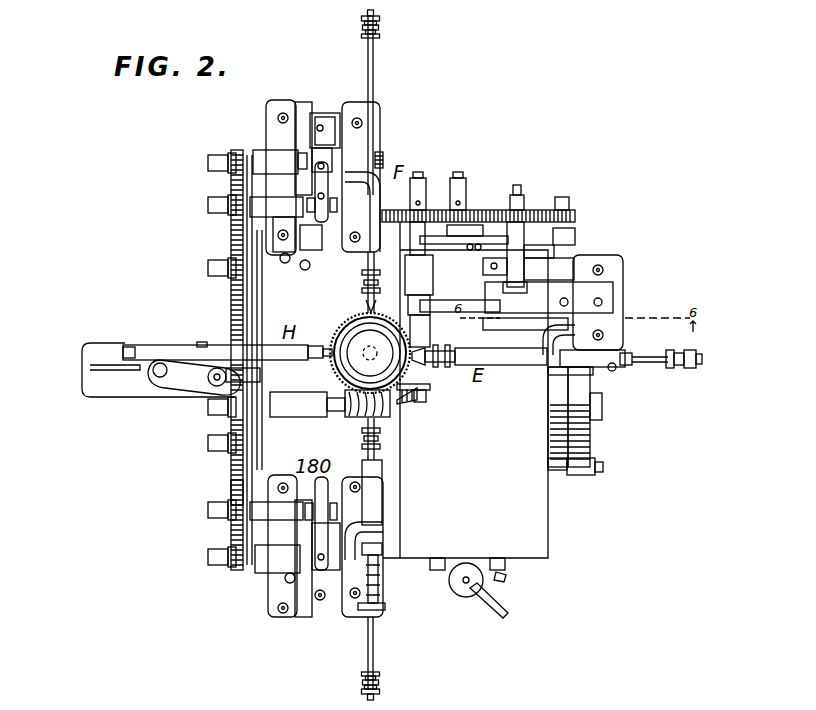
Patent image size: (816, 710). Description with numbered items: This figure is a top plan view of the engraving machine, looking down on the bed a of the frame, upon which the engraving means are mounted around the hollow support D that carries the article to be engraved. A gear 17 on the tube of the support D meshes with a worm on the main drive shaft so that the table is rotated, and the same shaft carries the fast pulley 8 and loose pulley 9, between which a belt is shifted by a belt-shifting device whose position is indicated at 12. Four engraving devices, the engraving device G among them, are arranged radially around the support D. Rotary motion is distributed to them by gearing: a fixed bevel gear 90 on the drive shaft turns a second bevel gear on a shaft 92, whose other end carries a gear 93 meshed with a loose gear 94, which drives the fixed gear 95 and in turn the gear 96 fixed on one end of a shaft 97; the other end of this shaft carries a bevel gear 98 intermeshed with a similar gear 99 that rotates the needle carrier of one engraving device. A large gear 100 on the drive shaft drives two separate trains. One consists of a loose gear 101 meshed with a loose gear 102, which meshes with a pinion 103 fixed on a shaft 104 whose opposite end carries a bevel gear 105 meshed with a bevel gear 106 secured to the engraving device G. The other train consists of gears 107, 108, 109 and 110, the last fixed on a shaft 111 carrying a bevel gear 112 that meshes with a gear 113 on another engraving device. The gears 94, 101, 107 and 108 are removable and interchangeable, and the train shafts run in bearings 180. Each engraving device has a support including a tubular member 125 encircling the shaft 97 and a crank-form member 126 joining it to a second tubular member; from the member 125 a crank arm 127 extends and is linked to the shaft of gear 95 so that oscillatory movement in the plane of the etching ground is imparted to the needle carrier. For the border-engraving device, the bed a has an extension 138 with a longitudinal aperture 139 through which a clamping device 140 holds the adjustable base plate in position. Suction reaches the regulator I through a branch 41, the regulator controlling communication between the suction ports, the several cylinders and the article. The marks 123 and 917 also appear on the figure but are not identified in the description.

The gear 107 is at (231, 297).
The gear 110 is at (231, 148).
The shaft 111 is at (215, 165).
The gear 109 is at (246, 195).
The gear 108 is at (218, 262).
The large gear 100 is at (226, 412).
The loose gear 101 is at (228, 458).
The loose gear 102 is at (233, 490).
The pinion 103 is at (230, 542).
The shaft 104 is at (228, 558).
The crank arm 127 is at (268, 165).
The bevel gear 112 is at (383, 158).
The bevel gear 113 is at (382, 176).
The screw 123 is at (348, 240).
The bearings 180 is at (330, 255).
The support D is at (350, 330).
The gear 17 is at (345, 368).
The bevel gear 917 is at (420, 402).
The clamping device 140 is at (160, 363).
The extension 138 is at (108, 397).
The longitudinal aperture 139 is at (90, 368).
The bevel gear 90 is at (382, 490).
The bed a is at (528, 533).
The shaft 92 is at (433, 320).
The loose gear 94 is at (470, 208).
The gear 93 is at (430, 205).
The fixed gear 95 is at (500, 207).
The gear 96 is at (546, 210).
The shaft 97 is at (568, 229).
The tubular member 125 is at (603, 305).
The crank-form member 126 is at (536, 352).
The bevel gear 98 is at (622, 347).
The fast pulley 8 is at (556, 440).
The loose pulley 9 is at (590, 438).
The bevel gear 99 is at (578, 372).
The belt-shifting device 12 is at (622, 370).
The engraving device G is at (374, 547).
The bevel gear 106 is at (386, 572).
The bevel gear 105 is at (388, 600).
The regulator I is at (469, 596).
The branch 41 is at (508, 582).